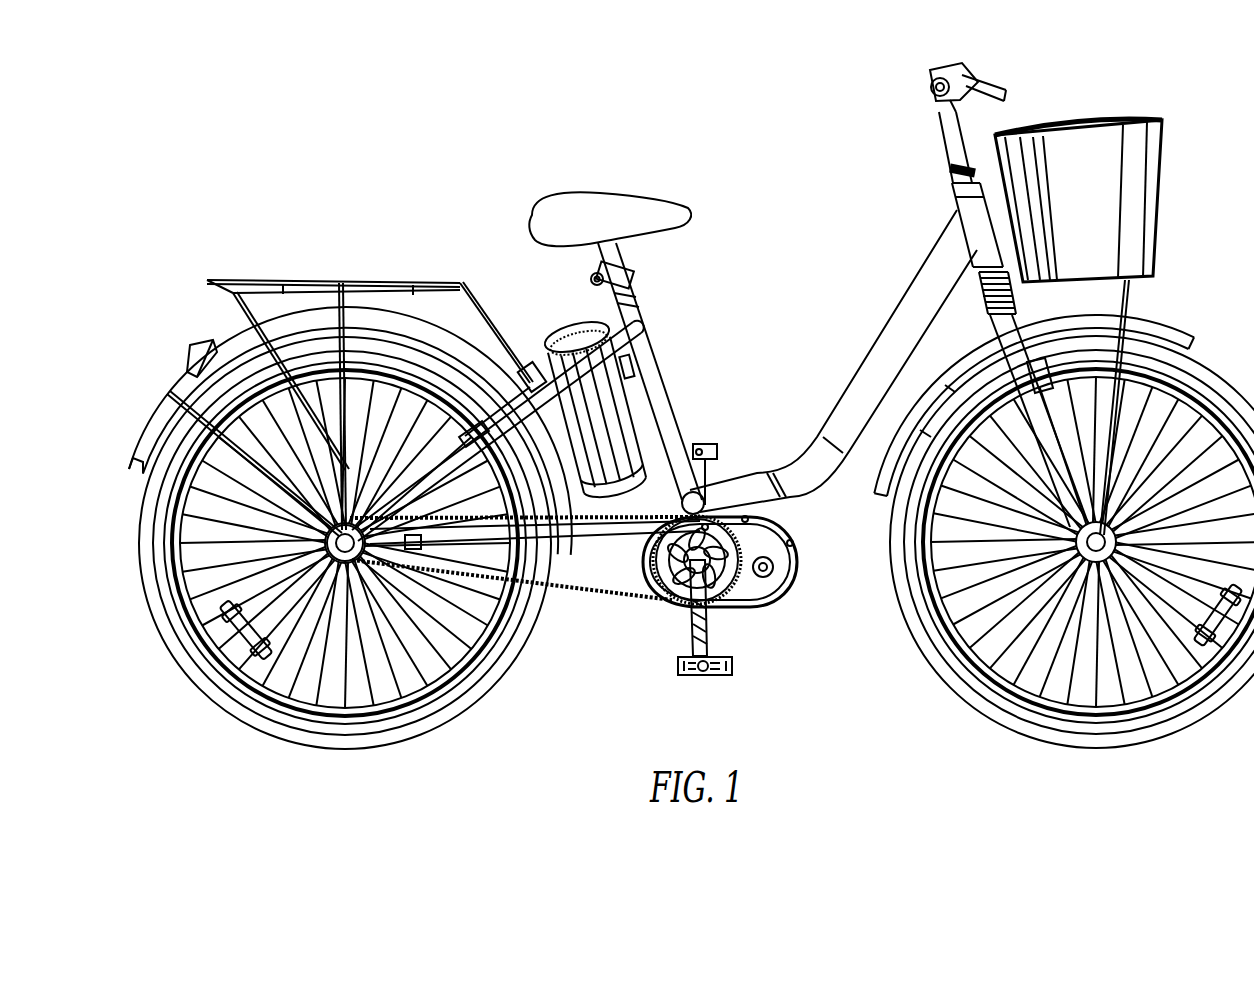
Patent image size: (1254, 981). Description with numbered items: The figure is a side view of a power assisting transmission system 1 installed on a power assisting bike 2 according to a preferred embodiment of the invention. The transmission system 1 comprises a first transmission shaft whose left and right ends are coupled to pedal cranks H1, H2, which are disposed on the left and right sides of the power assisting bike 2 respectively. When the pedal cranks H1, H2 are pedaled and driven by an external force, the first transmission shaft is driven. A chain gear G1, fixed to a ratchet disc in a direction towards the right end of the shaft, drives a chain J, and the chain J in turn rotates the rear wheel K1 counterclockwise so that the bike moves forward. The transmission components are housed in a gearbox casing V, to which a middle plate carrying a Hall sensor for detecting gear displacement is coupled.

The transmission system 1 is at (822, 566).
The power assisting bike 2 is at (358, 237).
The rear wheel K1 is at (230, 705).
The chain J is at (593, 598).
The chain gear G1 is at (667, 582).
The gearbox casing V is at (757, 592).
The pedal crank H2 is at (713, 640).
The pedal crank H1 is at (703, 470).